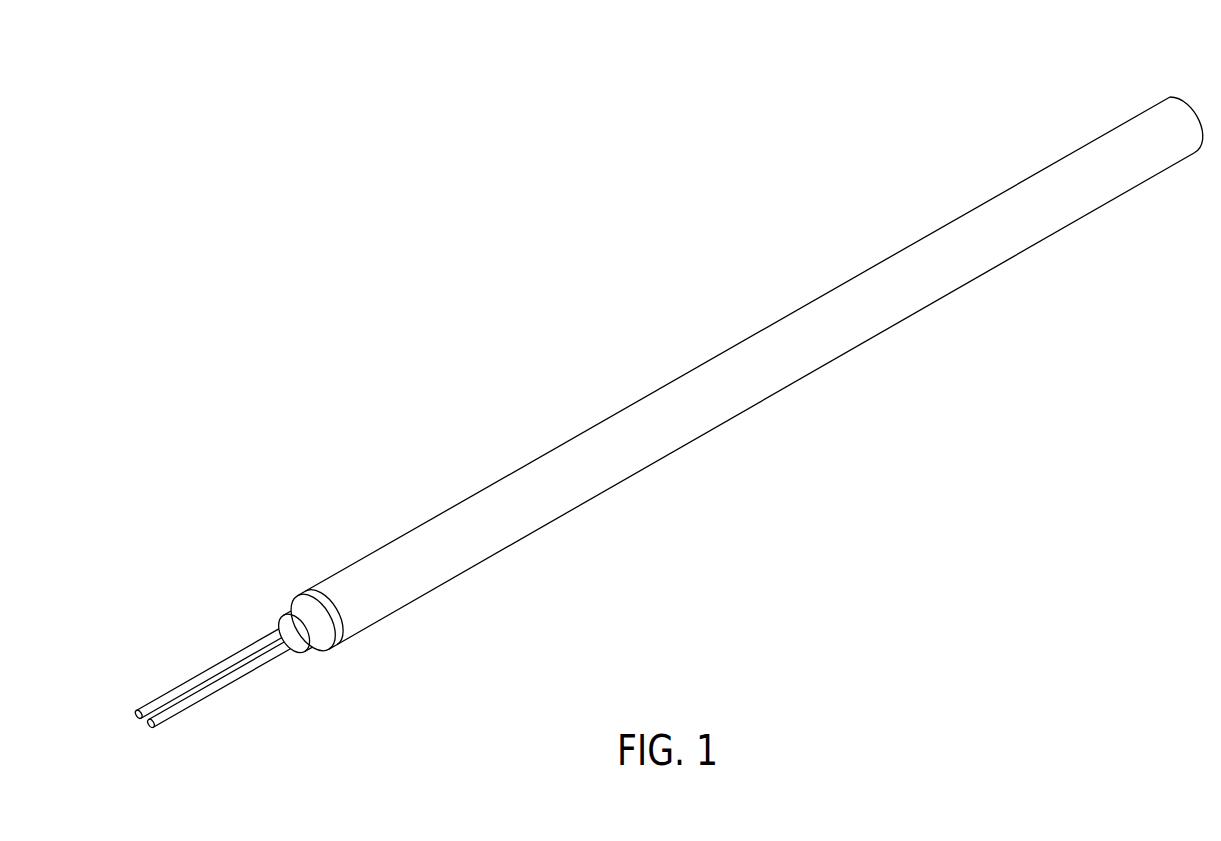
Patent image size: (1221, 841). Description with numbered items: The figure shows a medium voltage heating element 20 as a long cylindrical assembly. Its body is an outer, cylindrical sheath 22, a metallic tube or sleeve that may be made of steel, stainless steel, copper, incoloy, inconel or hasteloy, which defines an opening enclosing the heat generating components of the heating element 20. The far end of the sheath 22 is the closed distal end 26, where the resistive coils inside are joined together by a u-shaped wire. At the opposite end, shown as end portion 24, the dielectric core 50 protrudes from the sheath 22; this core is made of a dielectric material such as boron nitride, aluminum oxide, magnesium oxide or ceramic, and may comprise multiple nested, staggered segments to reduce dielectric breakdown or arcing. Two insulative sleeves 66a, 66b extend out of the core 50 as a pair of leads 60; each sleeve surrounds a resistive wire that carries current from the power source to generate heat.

The MV heating element 20 is at (668, 404).
The outer cylindrical sheath 22 is at (754, 334).
The proximal end portion 24 is at (368, 640).
The distal end 26 is at (1130, 95).
The dielectric core 50 is at (307, 610).
The lead wire assembly 60 is at (212, 707).
The insulative sleeve 66a is at (227, 667).
The insulative sleeve 66b is at (265, 657).